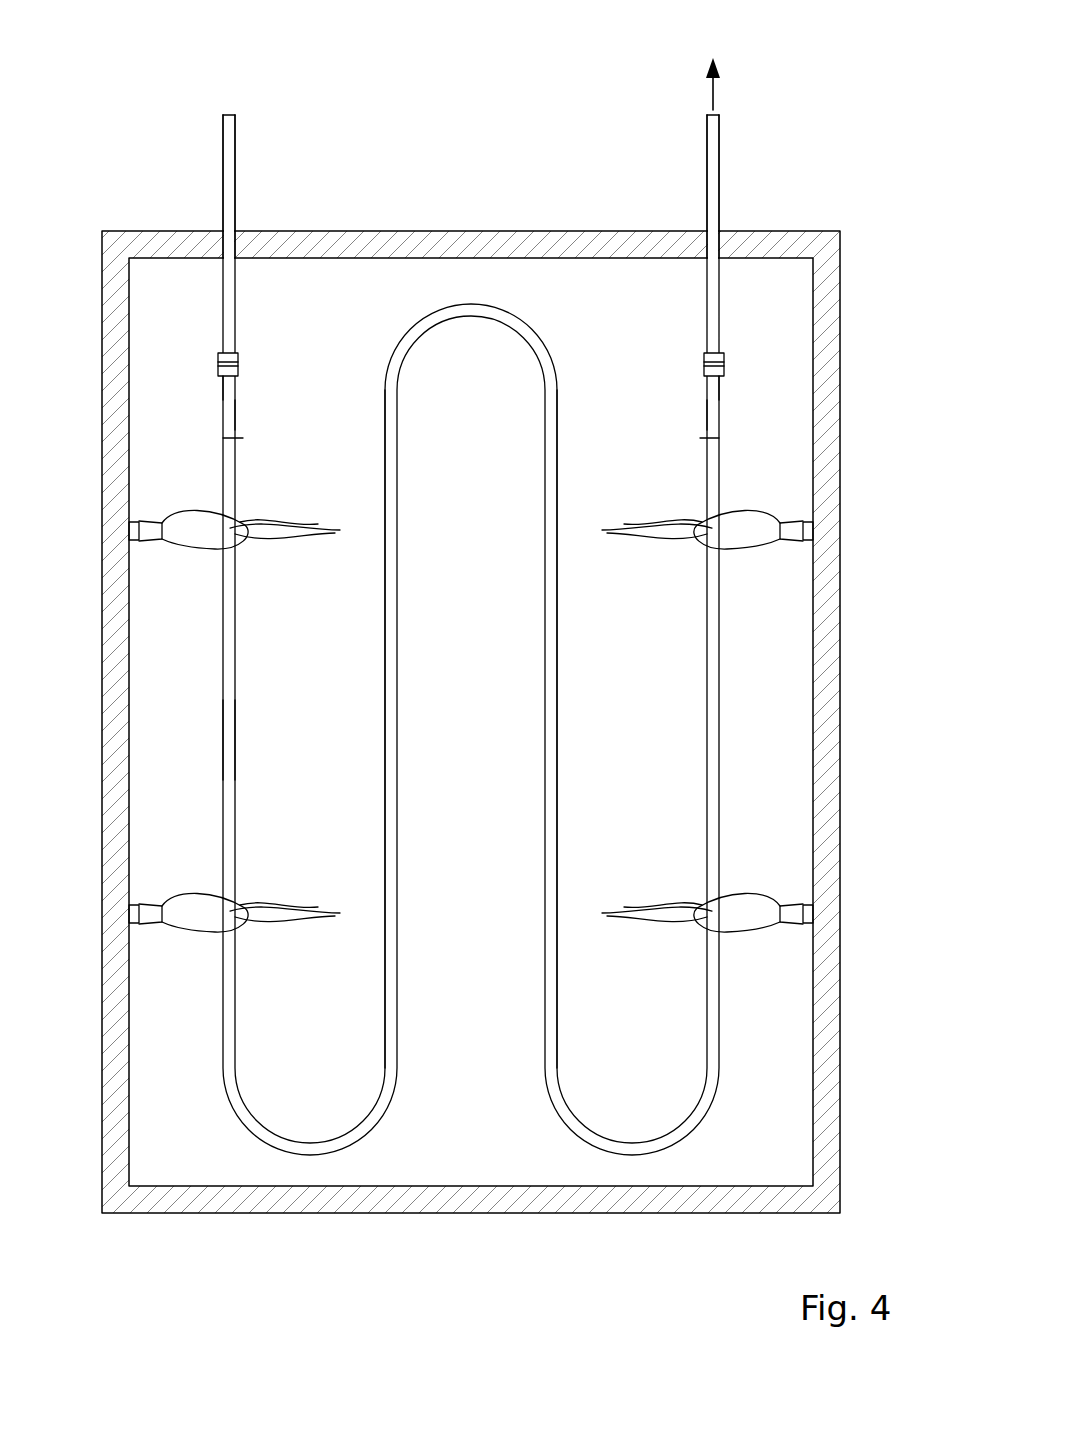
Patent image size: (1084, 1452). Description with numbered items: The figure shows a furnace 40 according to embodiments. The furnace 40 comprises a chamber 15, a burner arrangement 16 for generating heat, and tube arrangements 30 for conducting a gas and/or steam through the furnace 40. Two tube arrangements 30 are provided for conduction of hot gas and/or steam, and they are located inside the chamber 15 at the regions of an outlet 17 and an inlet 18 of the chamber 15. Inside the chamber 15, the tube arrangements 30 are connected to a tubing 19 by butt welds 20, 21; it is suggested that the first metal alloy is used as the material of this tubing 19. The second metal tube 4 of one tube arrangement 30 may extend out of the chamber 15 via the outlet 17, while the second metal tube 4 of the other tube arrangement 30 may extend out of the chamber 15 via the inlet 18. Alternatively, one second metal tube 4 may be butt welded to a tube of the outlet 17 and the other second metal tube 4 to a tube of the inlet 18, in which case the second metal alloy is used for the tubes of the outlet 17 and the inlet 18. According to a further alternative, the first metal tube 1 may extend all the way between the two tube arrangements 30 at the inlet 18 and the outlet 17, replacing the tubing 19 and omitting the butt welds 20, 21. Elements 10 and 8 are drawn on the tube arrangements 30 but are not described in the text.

The furnace 40 is at (344, 92).
The chamber 15 is at (764, 722).
The second metal tube 4 is at (235, 286).
The inlet 18 is at (228, 220).
The outlet 17 is at (714, 220).
The tube arrangement 30 is at (330, 328).
The coupling / fitting 10 is at (220, 360).
The tube segment below fitting 8 is at (220, 374).
The first metal tube 1 is at (235, 405).
The butt weld 20 is at (243, 438).
The butt weld 21 is at (700, 438).
The tubing 19 is at (228, 731).
The burner arrangement 16 is at (145, 540).